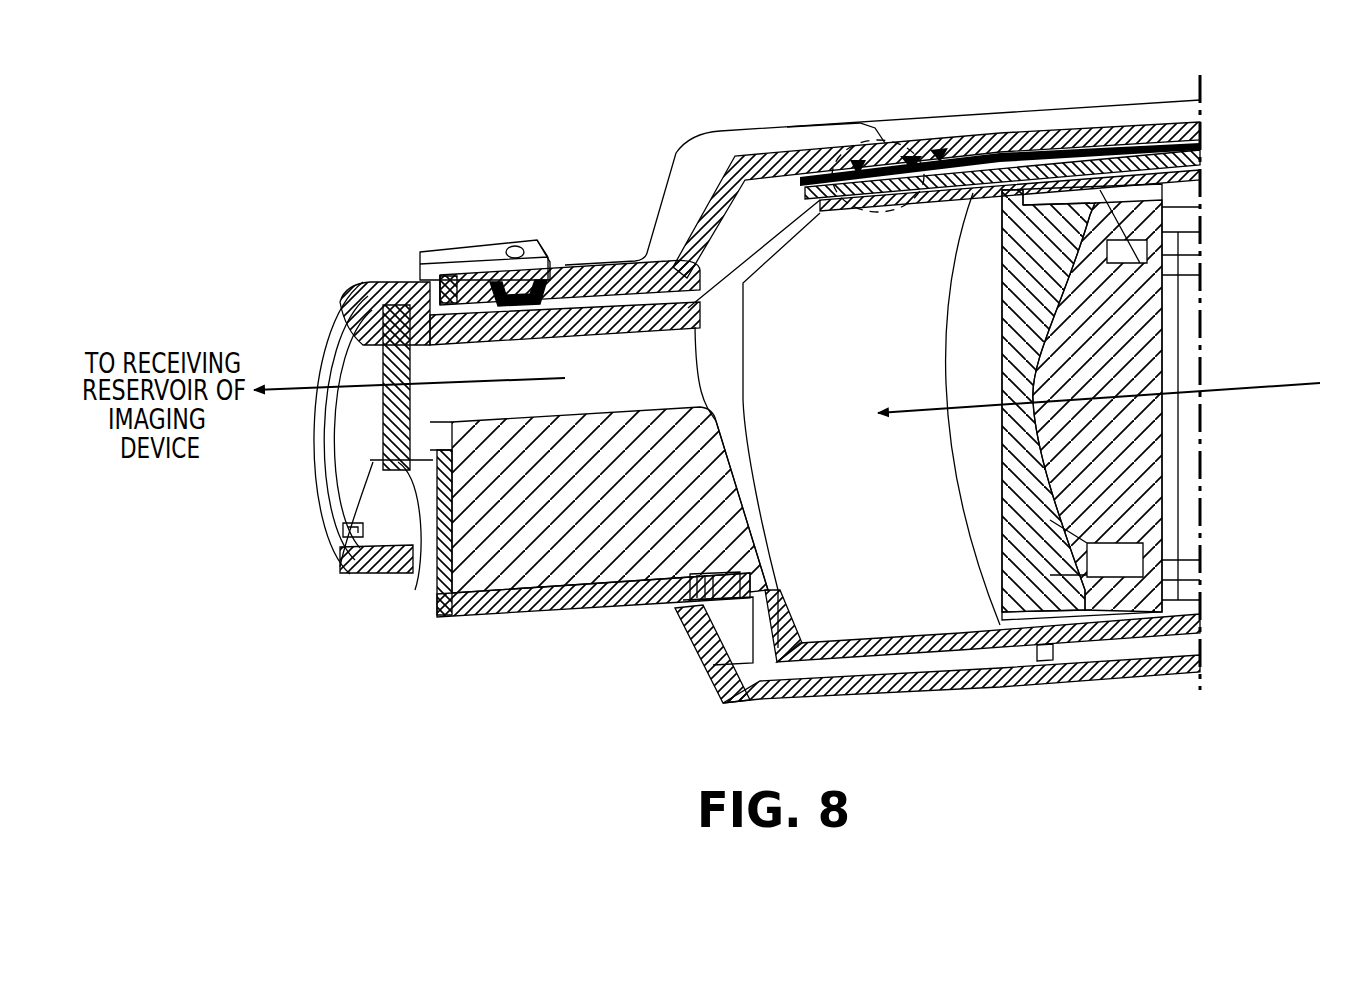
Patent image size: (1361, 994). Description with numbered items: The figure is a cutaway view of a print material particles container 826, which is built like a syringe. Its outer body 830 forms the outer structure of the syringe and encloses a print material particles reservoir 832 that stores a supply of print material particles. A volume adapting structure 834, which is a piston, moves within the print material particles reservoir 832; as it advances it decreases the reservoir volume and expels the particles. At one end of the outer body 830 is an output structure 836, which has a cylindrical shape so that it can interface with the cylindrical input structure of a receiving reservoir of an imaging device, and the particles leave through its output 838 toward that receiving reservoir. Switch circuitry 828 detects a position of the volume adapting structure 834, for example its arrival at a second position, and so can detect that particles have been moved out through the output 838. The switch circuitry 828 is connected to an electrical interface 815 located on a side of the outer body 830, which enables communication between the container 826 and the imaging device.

The print material particles container 826 is at (376, 92).
The switch circuitry 828 is at (880, 140).
The outer body 830 is at (1200, 134).
The print material particles reservoir 832 is at (1187, 177).
The volume adapting structure 834 is at (1177, 223).
The output structure 836 is at (585, 540).
The output 838 is at (430, 378).
The electrical interface 815 is at (478, 258).